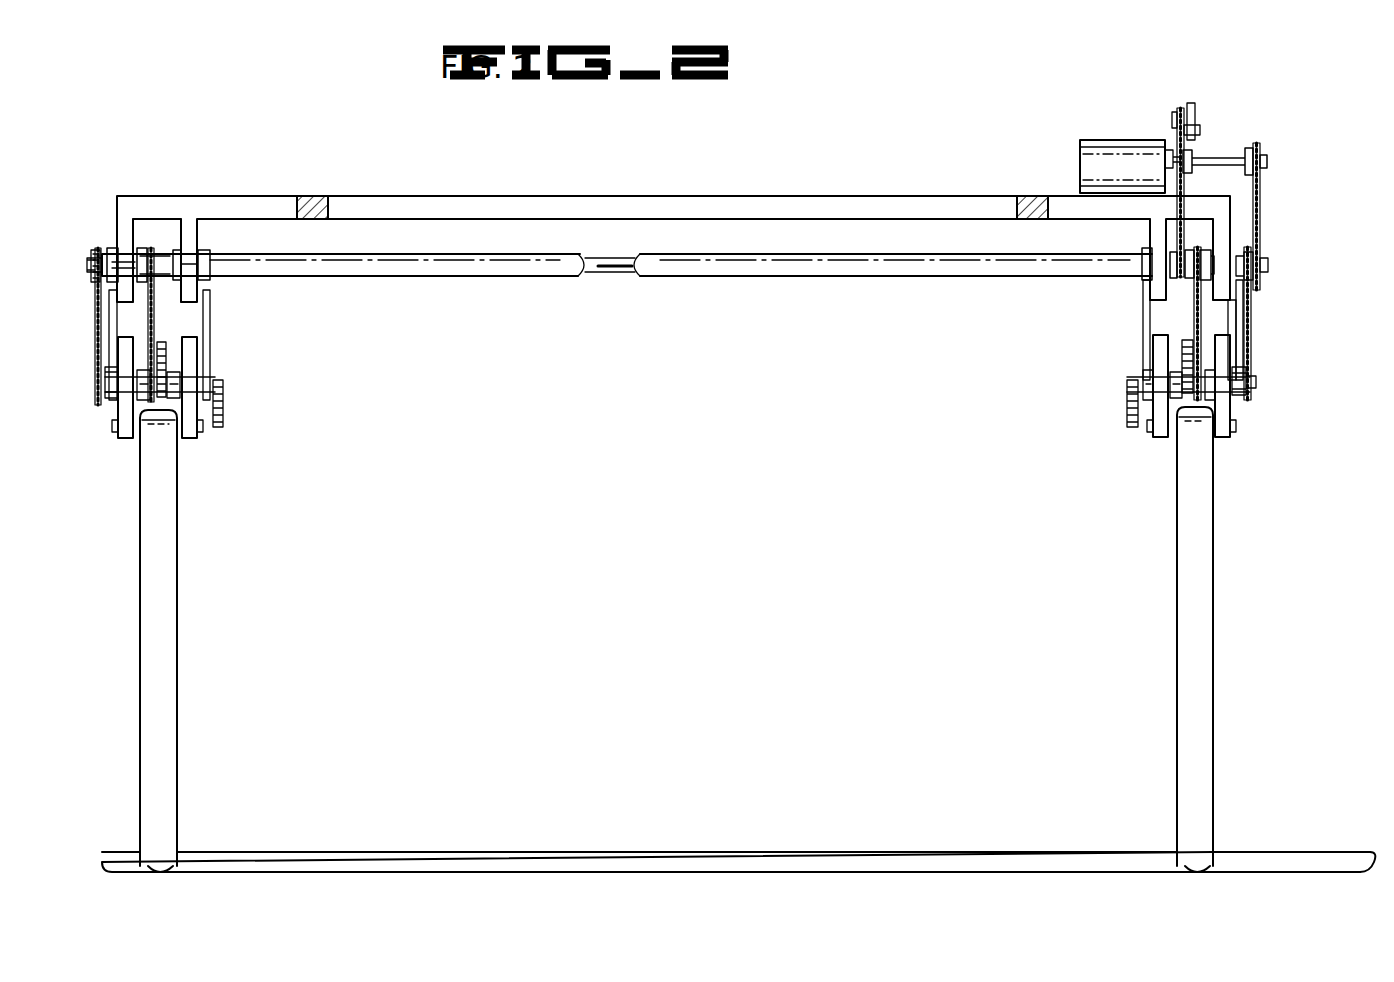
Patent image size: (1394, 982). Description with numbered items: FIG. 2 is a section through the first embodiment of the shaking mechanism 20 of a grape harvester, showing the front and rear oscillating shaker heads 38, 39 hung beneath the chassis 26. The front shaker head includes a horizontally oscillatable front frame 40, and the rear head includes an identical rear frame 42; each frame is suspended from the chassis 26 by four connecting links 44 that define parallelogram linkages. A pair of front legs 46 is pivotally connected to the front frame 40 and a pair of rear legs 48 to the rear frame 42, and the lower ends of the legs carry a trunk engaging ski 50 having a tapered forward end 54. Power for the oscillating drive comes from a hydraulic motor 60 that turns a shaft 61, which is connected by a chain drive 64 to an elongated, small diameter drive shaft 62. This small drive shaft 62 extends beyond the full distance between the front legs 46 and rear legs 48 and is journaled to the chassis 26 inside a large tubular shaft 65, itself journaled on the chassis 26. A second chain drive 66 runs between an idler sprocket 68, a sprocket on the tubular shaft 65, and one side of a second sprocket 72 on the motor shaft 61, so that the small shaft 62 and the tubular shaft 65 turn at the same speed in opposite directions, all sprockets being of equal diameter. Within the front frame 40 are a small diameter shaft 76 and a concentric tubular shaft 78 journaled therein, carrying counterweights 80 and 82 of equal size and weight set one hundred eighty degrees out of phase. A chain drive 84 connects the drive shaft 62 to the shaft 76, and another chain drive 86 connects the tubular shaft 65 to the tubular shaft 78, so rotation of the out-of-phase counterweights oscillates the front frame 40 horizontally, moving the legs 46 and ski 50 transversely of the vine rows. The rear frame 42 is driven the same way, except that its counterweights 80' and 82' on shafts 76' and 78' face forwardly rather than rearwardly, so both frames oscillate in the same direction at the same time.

The shaking mechanism 20 is at (1110, 172).
The chassis 26 is at (365, 194).
The front oscillating shaker head 38 is at (1262, 323).
The rear oscillating shaker head 39 is at (205, 343).
The front frame 40 is at (1160, 438).
The rear frame 42 is at (125, 442).
The connecting links 44 is at (1145, 322).
The front legs 46 is at (1185, 618).
The rear legs 48 is at (165, 634).
The trunk engaging ski 50 is at (632, 850).
The tapered forward end 54 is at (1282, 850).
The hydraulic motor 60 is at (1080, 142).
The motor shaft 61 is at (1217, 156).
The small diameter drive shaft 62 is at (618, 274).
The chain drive 64 is at (1260, 210).
The tubular shaft 65 is at (660, 250).
The second chain drive 66 is at (1175, 112).
The idler sprocket 68 is at (1183, 110).
The second sprocket 72 is at (1170, 160).
The small diameter shaft 76 is at (1276, 381).
The small diameter shaft 76' is at (80, 364).
The tubular shaft 78 is at (1182, 441).
The tubular shaft 78' is at (190, 377).
The counterweight 80 is at (1086, 403).
The counterweight 80' is at (264, 406).
The counterweight 82 is at (1134, 364).
The counterweight 82' is at (214, 346).
The chain drive 84 is at (1255, 352).
The chain drive 86 is at (1195, 300).